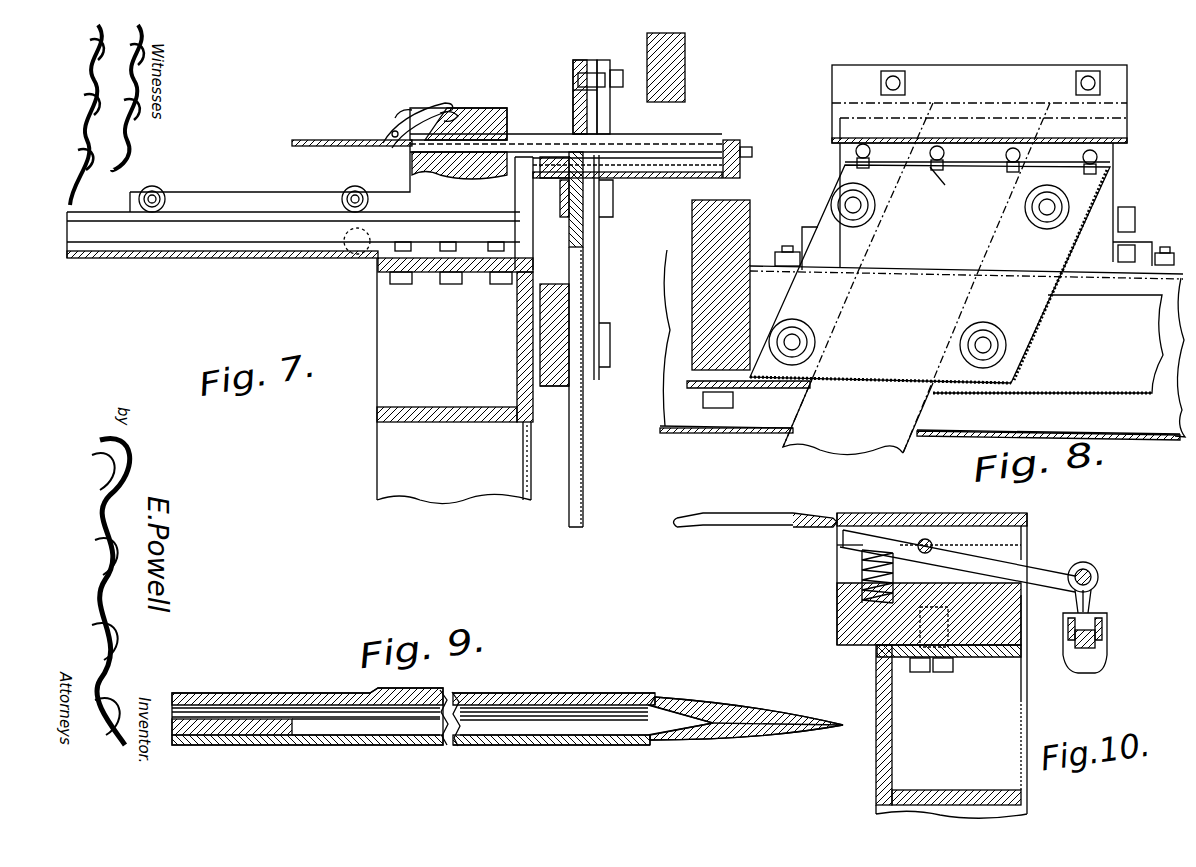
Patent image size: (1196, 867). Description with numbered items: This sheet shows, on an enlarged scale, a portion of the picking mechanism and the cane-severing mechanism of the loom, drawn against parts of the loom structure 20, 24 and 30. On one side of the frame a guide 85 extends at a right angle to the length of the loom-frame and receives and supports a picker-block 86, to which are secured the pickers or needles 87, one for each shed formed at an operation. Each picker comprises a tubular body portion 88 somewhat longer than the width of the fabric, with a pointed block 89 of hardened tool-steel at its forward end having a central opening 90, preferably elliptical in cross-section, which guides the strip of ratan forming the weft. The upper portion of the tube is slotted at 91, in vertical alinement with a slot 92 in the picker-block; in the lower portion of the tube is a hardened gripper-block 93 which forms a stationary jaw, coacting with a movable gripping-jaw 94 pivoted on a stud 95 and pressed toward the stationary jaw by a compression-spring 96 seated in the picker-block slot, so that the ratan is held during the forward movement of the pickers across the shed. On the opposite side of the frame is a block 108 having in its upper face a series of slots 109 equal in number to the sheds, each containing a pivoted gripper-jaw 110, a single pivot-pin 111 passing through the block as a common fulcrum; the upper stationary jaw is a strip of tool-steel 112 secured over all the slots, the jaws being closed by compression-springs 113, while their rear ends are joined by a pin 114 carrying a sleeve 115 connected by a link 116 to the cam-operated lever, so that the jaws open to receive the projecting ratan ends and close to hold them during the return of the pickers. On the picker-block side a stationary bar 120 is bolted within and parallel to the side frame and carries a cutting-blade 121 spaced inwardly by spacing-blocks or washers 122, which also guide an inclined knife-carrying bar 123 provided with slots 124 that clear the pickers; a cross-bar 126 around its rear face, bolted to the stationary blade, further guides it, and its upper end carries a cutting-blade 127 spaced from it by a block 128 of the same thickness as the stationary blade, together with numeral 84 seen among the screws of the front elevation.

In FIG. 7, the frame casing 20 is at (432, 407).
In FIG. 8, the frame casing 20 is at (690, 428).
In FIG. 10, the frame casing 20 is at (894, 753).
In FIG. 8, the standard 24 is at (690, 238).
In FIG. 7, the cross bar 30 is at (688, 66).
In FIG. 8, the screw 84 is at (1012, 163).
In FIG. 7, the guide 85 is at (228, 256).
In FIG. 8, the guide 85 is at (802, 240).
In FIG. 7, the picker-block 86 is at (458, 154).
In FIG. 8, the picker-block 86 is at (837, 155).
In FIG. 7, the pickers or needles 87 is at (648, 146).
In FIG. 9, the pickers or needles 87 is at (540, 696).
In FIG. 9, the tubular body portion 88 is at (528, 740).
In FIG. 10, the tubular body portion 88 is at (707, 527).
In FIG. 8, the pointed block 89 is at (864, 165).
In FIG. 9, the pointed block 89 is at (742, 702).
In FIG. 10, the pointed block 89 is at (818, 514).
In FIG. 9, the central opening 90 is at (714, 726).
In FIG. 9, the slot 91 is at (320, 685).
In FIG. 7, the slot 92 is at (420, 112).
In FIG. 7, the gripper-block 93 is at (393, 147).
In FIG. 9, the gripper-block 93 is at (272, 736).
In FIG. 7, the movable gripping-jaw 94 is at (390, 132).
In FIG. 7, the stud 95 is at (403, 108).
In FIG. 7, the compression-spring 96 is at (450, 112).
In FIG. 10, the block 108 is at (838, 615).
In FIG. 10, the slots 109 is at (1030, 540).
In FIG. 10, the gripper-jaw 110 is at (960, 556).
In FIG. 10, the pivot-pin 111 is at (927, 538).
In FIG. 10, the strip of tool-steel 112 is at (993, 513).
In FIG. 10, the compression-springs 113 is at (860, 574).
In FIG. 10, the pin 114 is at (1100, 568).
In FIG. 10, the sleeve 115 is at (1099, 578).
In FIG. 10, the link 116 is at (1108, 660).
In FIG. 7, the stationary bar 120 is at (557, 390).
In FIG. 8, the stationary bar 120 is at (1048, 344).
In FIG. 7, the cutting-blade 121 is at (594, 374).
In FIG. 8, the cutting-blade 121 is at (930, 274).
In FIG. 7, the spacing-blocks or washers 122 is at (577, 320).
In FIG. 7, the knife-carrying bar 123 is at (574, 428).
In FIG. 8, the knife-carrying bar 123 is at (916, 279).
In FIG. 7, the slots 124 is at (572, 118).
In FIG. 8, the slots 124 is at (942, 186).
In FIG. 7, the cross-bar 126 is at (560, 222).
In FIG. 7, the cutting-blade 127 is at (618, 115).
In FIG. 8, the cutting-blade 127 is at (975, 96).
In FIG. 7, the block 128 is at (588, 65).